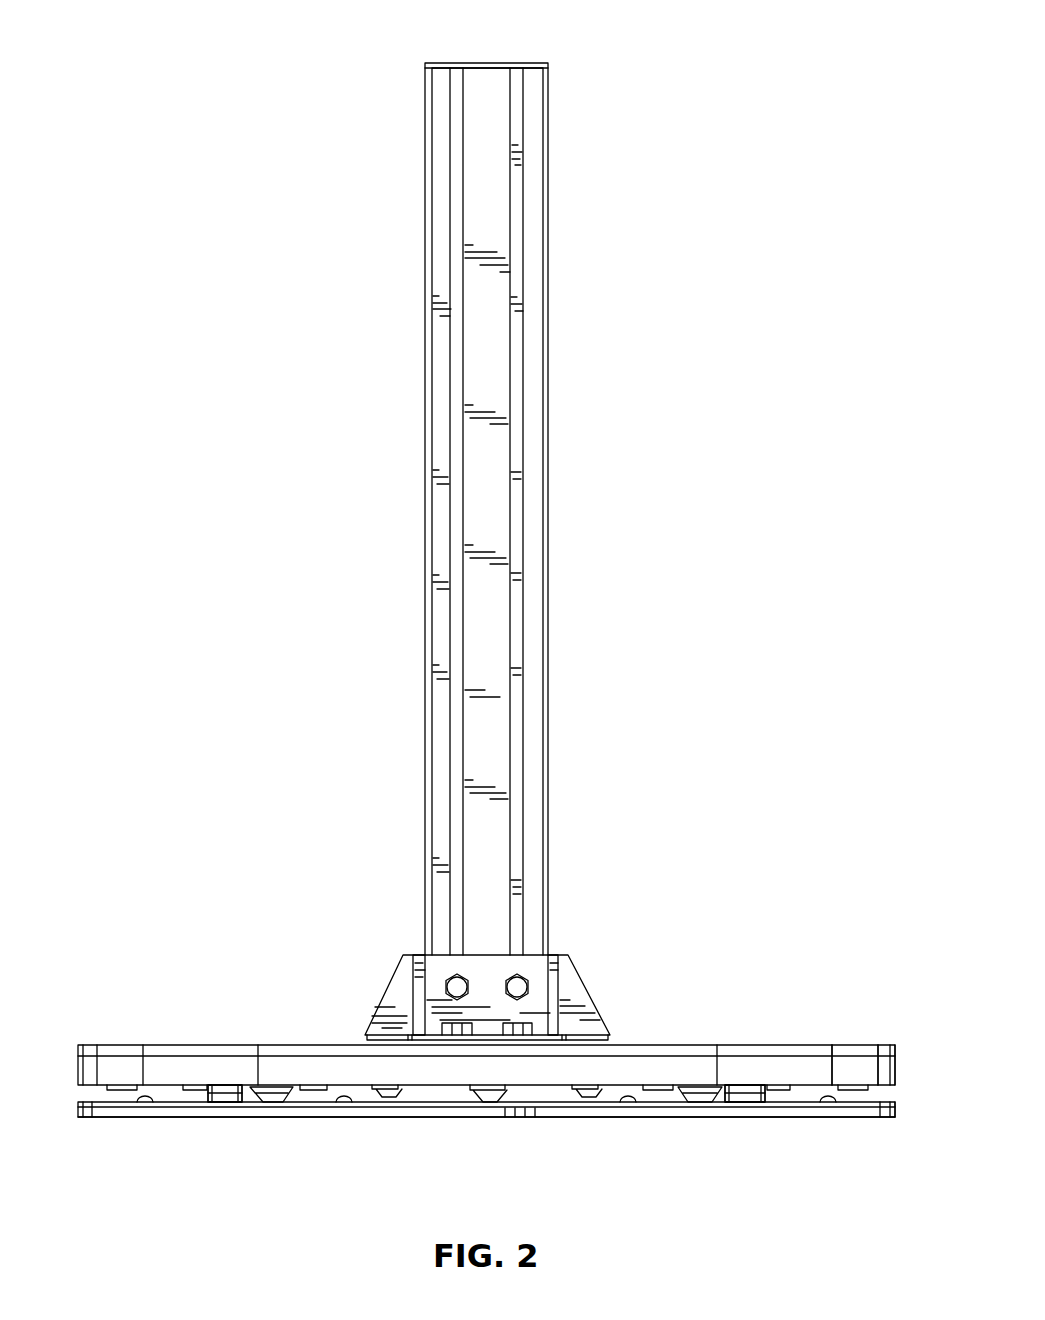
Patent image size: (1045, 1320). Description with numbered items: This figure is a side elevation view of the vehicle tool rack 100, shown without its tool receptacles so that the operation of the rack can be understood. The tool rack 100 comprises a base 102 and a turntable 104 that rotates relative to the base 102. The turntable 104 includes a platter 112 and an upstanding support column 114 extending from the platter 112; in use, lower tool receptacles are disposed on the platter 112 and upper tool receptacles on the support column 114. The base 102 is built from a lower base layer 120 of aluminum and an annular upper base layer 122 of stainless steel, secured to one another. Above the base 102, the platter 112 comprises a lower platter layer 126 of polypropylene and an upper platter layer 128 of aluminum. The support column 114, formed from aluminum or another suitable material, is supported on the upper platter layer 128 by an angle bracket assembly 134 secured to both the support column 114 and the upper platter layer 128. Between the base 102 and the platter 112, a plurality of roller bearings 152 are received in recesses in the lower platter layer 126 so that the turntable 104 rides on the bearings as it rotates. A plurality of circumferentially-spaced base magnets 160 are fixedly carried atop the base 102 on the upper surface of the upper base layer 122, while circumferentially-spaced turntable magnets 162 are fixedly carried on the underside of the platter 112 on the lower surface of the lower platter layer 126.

The vehicle tool rack 100 is at (183, 143).
The base 102 is at (80, 1109).
The turntable 104 is at (648, 1026).
The platter 112 is at (80, 1058).
The support column 114 is at (550, 383).
The lower base layer 120 is at (897, 1117).
The upper base layer 122 is at (897, 1102).
The lower platter layer 126 is at (897, 1073).
The upper platter layer 128 is at (898, 1046).
The angle bracket assembly 134 is at (391, 993).
The roller bearings 152 is at (270, 1100).
The base magnets 160 is at (225, 1098).
The turntable magnets 162 is at (227, 1088).